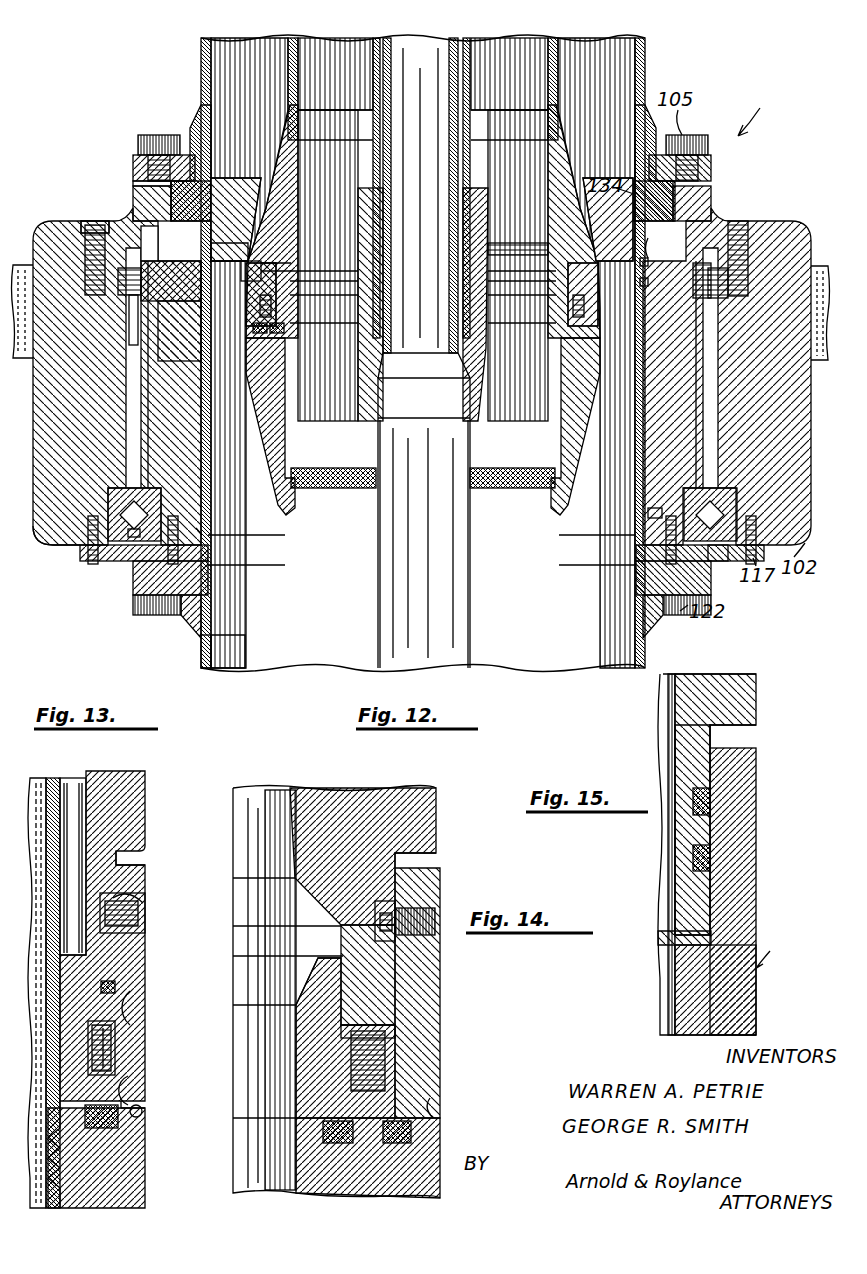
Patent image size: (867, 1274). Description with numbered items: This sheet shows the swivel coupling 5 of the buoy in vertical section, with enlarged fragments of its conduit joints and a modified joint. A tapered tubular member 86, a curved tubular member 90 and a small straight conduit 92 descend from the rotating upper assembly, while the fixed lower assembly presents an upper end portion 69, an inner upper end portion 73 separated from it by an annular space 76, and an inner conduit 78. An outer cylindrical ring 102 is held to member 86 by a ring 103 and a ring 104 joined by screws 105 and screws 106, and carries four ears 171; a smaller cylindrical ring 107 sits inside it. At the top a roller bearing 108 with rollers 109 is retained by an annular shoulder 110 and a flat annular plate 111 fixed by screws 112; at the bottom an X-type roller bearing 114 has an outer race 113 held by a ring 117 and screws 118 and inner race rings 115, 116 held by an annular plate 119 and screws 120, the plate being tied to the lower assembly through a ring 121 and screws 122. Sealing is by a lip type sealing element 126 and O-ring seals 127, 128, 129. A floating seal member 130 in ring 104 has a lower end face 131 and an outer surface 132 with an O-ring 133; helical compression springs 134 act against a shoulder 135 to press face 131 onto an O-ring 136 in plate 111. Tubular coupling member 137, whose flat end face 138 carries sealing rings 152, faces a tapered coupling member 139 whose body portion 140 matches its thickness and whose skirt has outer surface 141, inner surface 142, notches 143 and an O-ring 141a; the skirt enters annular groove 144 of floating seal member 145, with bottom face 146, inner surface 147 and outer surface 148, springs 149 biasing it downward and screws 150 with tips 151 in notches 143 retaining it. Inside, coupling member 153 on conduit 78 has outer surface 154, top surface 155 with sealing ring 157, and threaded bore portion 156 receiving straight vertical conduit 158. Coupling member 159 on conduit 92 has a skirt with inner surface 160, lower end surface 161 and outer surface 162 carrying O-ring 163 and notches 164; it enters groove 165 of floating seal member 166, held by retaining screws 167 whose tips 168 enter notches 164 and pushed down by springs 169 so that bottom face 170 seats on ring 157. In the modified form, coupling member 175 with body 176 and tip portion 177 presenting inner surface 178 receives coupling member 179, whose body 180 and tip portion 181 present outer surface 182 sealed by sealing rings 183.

In FIG. 12, the swivel coupling 5 is at (750, 110).
In FIG. 12, the upper end portion 69 is at (192, 640).
In FIG. 12, the upper end portion 73 is at (550, 505).
In FIG. 12, the annular space 76 is at (222, 662).
In FIG. 12, the inner conduit 78 is at (448, 550).
In FIG. 12, the tapered tubular member 86 is at (193, 52).
In FIG. 12, the tubular member 90 is at (278, 77).
In FIG. 12, the straight conduit 92 is at (452, 67).
In FIG. 12, the outer cylindrical ring 102 is at (30, 540).
In FIG. 12, the ring 103 is at (125, 148).
In FIG. 12, the ring 104 is at (40, 203).
In FIG. 12, the screws 105 is at (148, 127).
In FIG. 12, the screws 106 is at (86, 217).
In FIG. 12, the smaller cylindrical ring 107 is at (173, 374).
In FIG. 12, the roller bearing 108 is at (108, 290).
In FIG. 12, the rollers 109 is at (166, 284).
In FIG. 12, the annular shoulder 110 is at (130, 242).
In FIG. 12, the flat annular plate 111 is at (672, 250).
In FIG. 12, the screws 112 is at (702, 262).
In FIG. 12, the outer race 113 is at (105, 480).
In FIG. 12, the X-type roller bearing 114 is at (708, 480).
In FIG. 12, the inner race ring 115 is at (142, 480).
In FIG. 12, the inner race ring 116 is at (148, 487).
In FIG. 12, the ring 117 is at (72, 545).
In FIG. 12, the screws 118 is at (88, 553).
In FIG. 12, the annular plate 119 is at (220, 566).
In FIG. 12, the screws 120 is at (648, 500).
In FIG. 12, the ring 121 is at (176, 607).
In FIG. 12, the screws 122 is at (124, 596).
In FIG. 12, the lip type annular sealing element 126 is at (707, 553).
In FIG. 12, the O-ring seal 127 is at (190, 518).
In FIG. 12, the O-ring seal 128 is at (768, 225).
In FIG. 12, the O-ring seal 129 is at (634, 277).
In FIG. 12, the floating seal member 130 is at (256, 207).
In FIG. 12, the lower end face 131 is at (636, 250).
In FIG. 12, the cylindrical outer surface 132 is at (149, 202).
In FIG. 12, the O-ring 133 is at (118, 218).
In FIG. 12, the helical compression springs 134 is at (166, 175).
In FIG. 12, the shoulder 135 is at (212, 185).
In FIG. 12, the O-ring 136 is at (246, 226).
In FIG. 12, the tubular coupling member 137 is at (268, 380).
In FIG. 14, the tubular coupling member 137 is at (366, 1181).
In FIG. 14, the end face 138 is at (430, 1086).
In FIG. 12, the tubular coupling member 139 is at (261, 124).
In FIG. 14, the tubular coupling member 139 is at (295, 773).
In FIG. 12, the body portion 140 is at (305, 195).
In FIG. 14, the cylindrical outer surface 141 is at (388, 845).
In FIG. 14, the O-ring 141a is at (362, 978).
In FIG. 14, the cylindrical inner surface 142 is at (318, 924).
In FIG. 14, the notches 143 is at (372, 893).
In FIG. 14, the annular groove 144 is at (333, 1020).
In FIG. 12, the floating seal member 145 is at (172, 312).
In FIG. 14, the floating seal member 145 is at (434, 1022).
In FIG. 14, the bottom face 146 is at (292, 1123).
In FIG. 14, the cylindrical inner surface 147 is at (285, 1008).
In FIG. 14, the cylindrical outer surface 148 is at (434, 966).
In FIG. 14, the springs 149 is at (342, 1028).
In FIG. 12, the screws 150 is at (240, 265).
In FIG. 14, the screws 150 is at (420, 888).
In FIG. 14, the tip 151 is at (372, 908).
In FIG. 12, the sealing ring 152 is at (292, 332).
In FIG. 14, the sealing ring 152 is at (375, 1150).
In FIG. 12, the tubular coupling member 153 is at (470, 372).
In FIG. 13, the tubular coupling member 153 is at (141, 1172).
In FIG. 13, the cylindrical outer surface 154 is at (130, 1142).
In FIG. 13, the top surface 155 is at (125, 1076).
In FIG. 13, the threaded bore portion 156 is at (56, 1138).
In FIG. 12, the sealing ring 157 is at (470, 318).
In FIG. 13, the sealing ring 157 is at (97, 1118).
In FIG. 12, the straight vertical conduit 158 is at (455, 50).
In FIG. 13, the straight vertical conduit 158 is at (50, 747).
In FIG. 12, the tubular coupling member 159 is at (495, 180).
In FIG. 13, the tubular coupling member 159 is at (125, 763).
In FIG. 13, the inner cylindrical surface 160 is at (65, 800).
In FIG. 13, the lower end surface 161 is at (108, 1014).
In FIG. 13, the cylindrical outer surface 162 is at (125, 845).
In FIG. 13, the O-ring 163 is at (108, 973).
In FIG. 13, the notches 164 is at (125, 913).
In FIG. 13, the annular groove 165 is at (105, 1028).
In FIG. 12, the annular floating seal member 166 is at (474, 290).
In FIG. 13, the annular floating seal member 166 is at (138, 992).
In FIG. 12, the retaining screws 167 is at (478, 260).
In FIG. 13, the retaining screws 167 is at (128, 896).
In FIG. 13, the tip portions 168 is at (128, 884).
In FIG. 13, the helical compression springs 169 is at (100, 1043).
In FIG. 13, the bottom face 170 is at (135, 1103).
In FIG. 12, the ears 171 is at (808, 240).
In FIG. 15, the tubular coupling member 175 is at (780, 950).
In FIG. 15, the body 176 is at (730, 989).
In FIG. 15, the upper tip portion 177 is at (738, 838).
In FIG. 15, the cylindrical inner surface 178 is at (705, 907).
In FIG. 15, the tubular coupling member 179 is at (660, 694).
In FIG. 15, the body 180 is at (748, 695).
In FIG. 15, the tip portion 181 is at (672, 882).
In FIG. 15, the cylindrical outer surface 182 is at (741, 724).
In FIG. 15, the sealing ring 183 is at (705, 792).